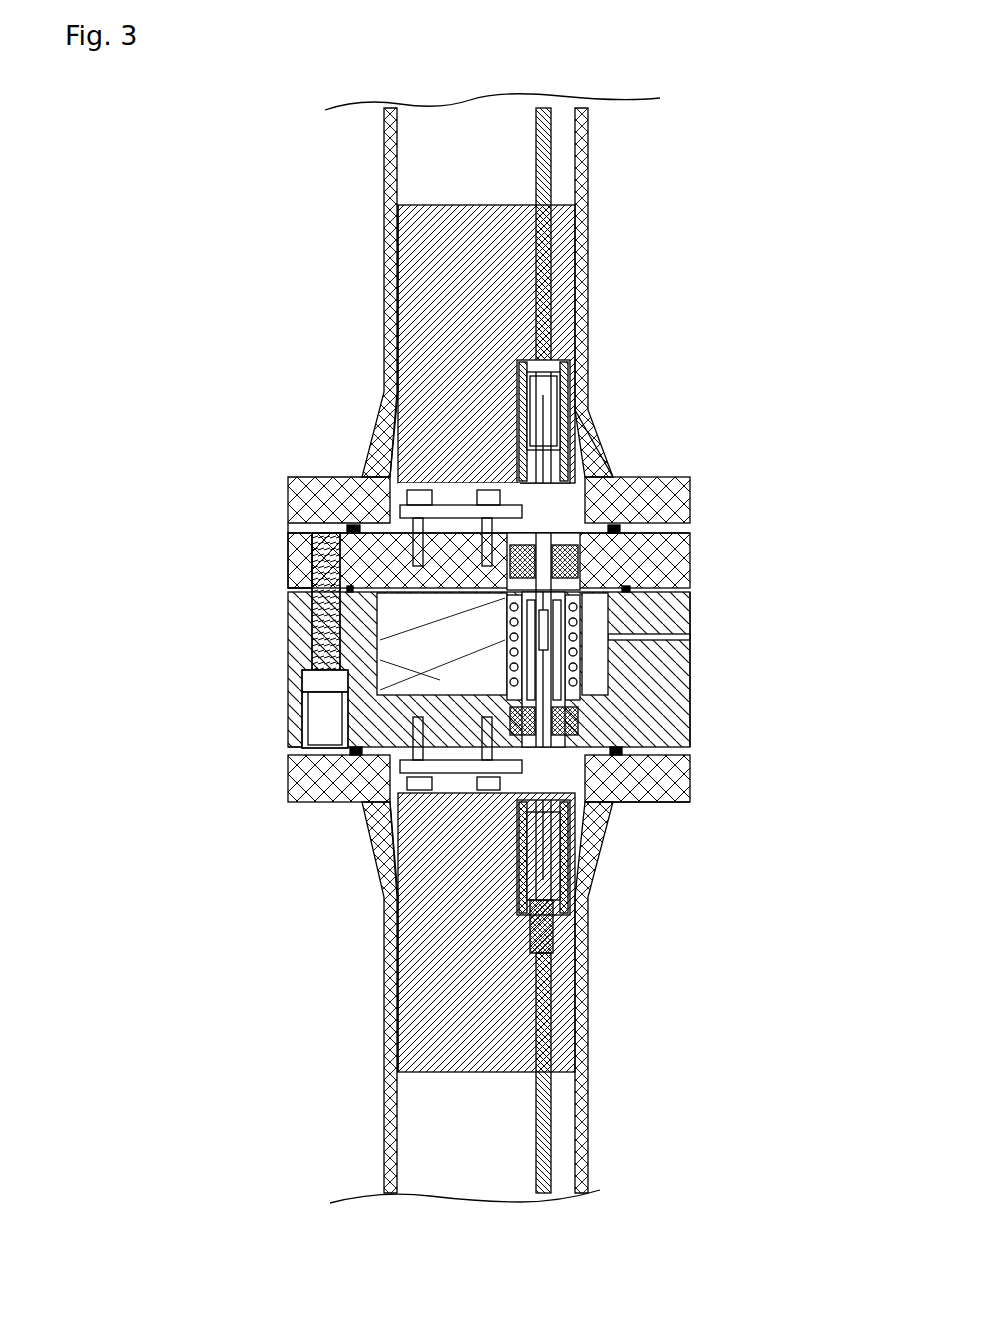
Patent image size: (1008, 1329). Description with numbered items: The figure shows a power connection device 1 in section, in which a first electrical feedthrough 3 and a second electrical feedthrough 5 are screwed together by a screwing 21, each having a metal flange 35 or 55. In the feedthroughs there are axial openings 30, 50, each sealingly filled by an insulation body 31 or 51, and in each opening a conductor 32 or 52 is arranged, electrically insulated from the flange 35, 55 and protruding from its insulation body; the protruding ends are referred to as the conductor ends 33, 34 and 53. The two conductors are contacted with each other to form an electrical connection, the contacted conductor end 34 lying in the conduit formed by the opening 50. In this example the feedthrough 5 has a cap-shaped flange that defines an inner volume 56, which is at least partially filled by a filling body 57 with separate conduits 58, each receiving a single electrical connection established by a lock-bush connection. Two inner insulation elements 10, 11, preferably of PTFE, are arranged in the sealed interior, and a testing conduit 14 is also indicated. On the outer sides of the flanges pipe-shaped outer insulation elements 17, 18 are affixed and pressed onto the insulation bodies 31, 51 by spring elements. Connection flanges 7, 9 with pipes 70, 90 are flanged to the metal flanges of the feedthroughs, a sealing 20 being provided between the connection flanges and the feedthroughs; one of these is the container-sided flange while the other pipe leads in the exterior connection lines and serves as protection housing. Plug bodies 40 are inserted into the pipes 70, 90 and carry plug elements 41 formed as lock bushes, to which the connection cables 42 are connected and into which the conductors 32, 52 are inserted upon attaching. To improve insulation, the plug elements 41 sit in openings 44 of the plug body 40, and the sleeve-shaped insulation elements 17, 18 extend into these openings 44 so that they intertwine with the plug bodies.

The power connection device 1 is at (143, 176).
The first electrical feedthrough 3 is at (740, 545).
The second electrical feedthrough 5 is at (812, 650).
The connection flange 7 is at (288, 477).
The connection flange 9 is at (288, 790).
The inner insulation element 10 is at (335, 728).
The inner insulation element 11 is at (288, 587).
The testing conduit 14 is at (690, 635).
The outer insulation element 17 is at (612, 462).
The outer insulation element 18 is at (612, 815).
The sealing 20 is at (690, 615).
The screwing 21 is at (310, 690).
The opening 30 is at (690, 545).
The insulation body 31 is at (690, 578).
The conductor 32 is at (288, 555).
The conductor end 33 is at (597, 400).
The conductor end 34 is at (440, 618).
The metal flange 35 is at (288, 540).
The plug body 40 is at (430, 262).
The plug element 41 is at (575, 352).
The connection cable 42 is at (552, 160).
The opening 44 is at (470, 398).
The opening 50 is at (690, 690).
The insulation body 51 is at (690, 743).
The conductor 52 is at (657, 807).
The conductor end 53 is at (598, 893).
The metal flange 55 is at (287, 738).
The inner volume 56 is at (690, 670).
The filling body 57 is at (690, 692).
The conduit 58 is at (340, 660).
The pipe 70 is at (383, 316).
The pipe 90 is at (382, 935).